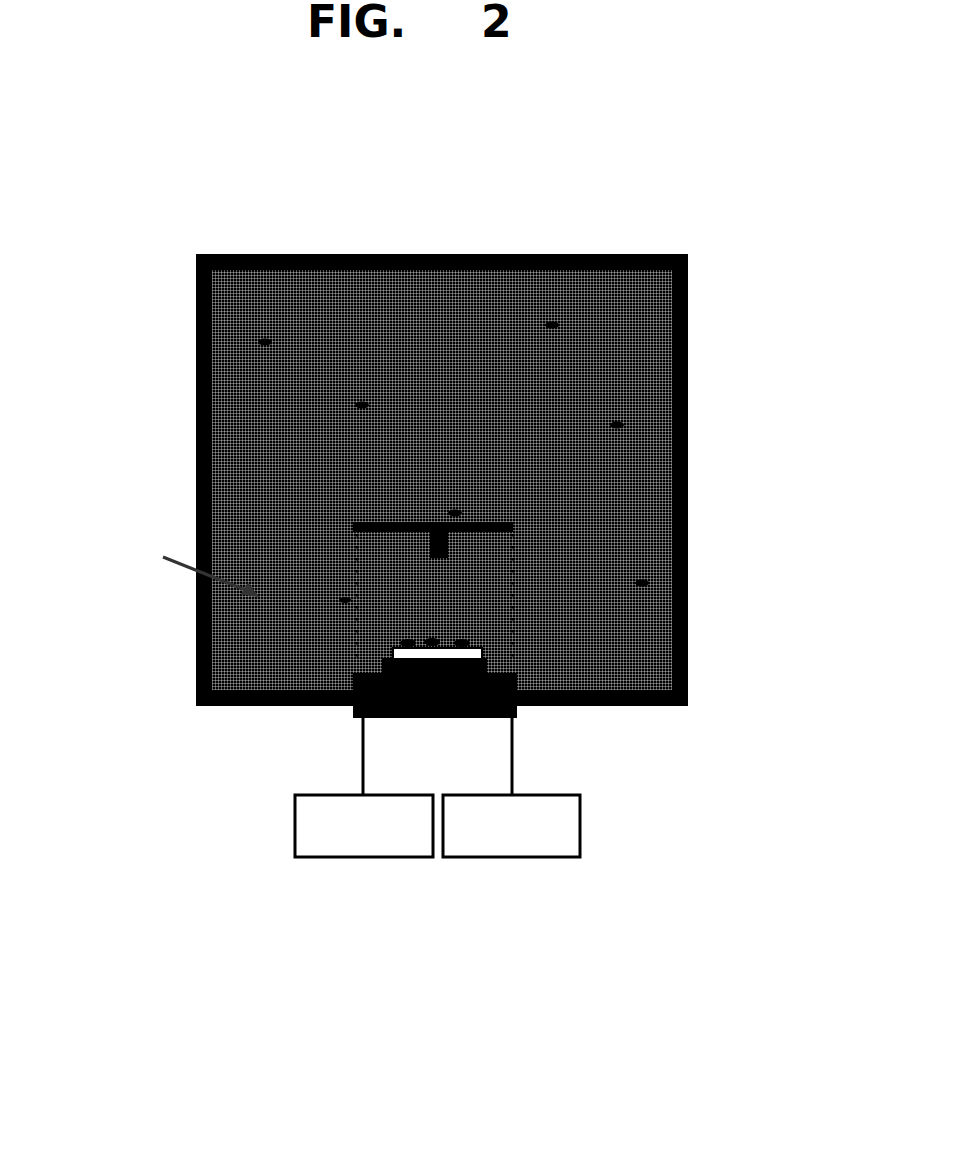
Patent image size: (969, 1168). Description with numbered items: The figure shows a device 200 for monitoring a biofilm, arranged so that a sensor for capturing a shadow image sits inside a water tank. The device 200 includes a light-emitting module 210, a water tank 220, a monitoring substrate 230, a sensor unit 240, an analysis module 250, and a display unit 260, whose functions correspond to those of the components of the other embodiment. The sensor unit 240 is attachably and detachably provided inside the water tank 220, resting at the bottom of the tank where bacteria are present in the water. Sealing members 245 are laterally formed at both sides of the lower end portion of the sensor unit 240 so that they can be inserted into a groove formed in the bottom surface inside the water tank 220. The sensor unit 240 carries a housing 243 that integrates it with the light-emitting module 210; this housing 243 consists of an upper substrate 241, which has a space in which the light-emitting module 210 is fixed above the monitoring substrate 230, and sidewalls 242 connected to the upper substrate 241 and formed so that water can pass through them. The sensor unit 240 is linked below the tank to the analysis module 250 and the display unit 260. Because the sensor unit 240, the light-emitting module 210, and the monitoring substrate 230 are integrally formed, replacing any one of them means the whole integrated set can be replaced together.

The device 200 is at (651, 231).
The light-emitting module 210 is at (443, 521).
The water tank 220 is at (196, 428).
The monitoring substrate 230 is at (393, 652).
The sensor unit 240 is at (352, 713).
The upper substrate 241 is at (514, 526).
The sidewalls 242 is at (515, 565).
The housing 243 is at (614, 522).
The sealing members 245 is at (520, 712).
The analysis module 250 is at (364, 858).
The display unit 260 is at (523, 858).